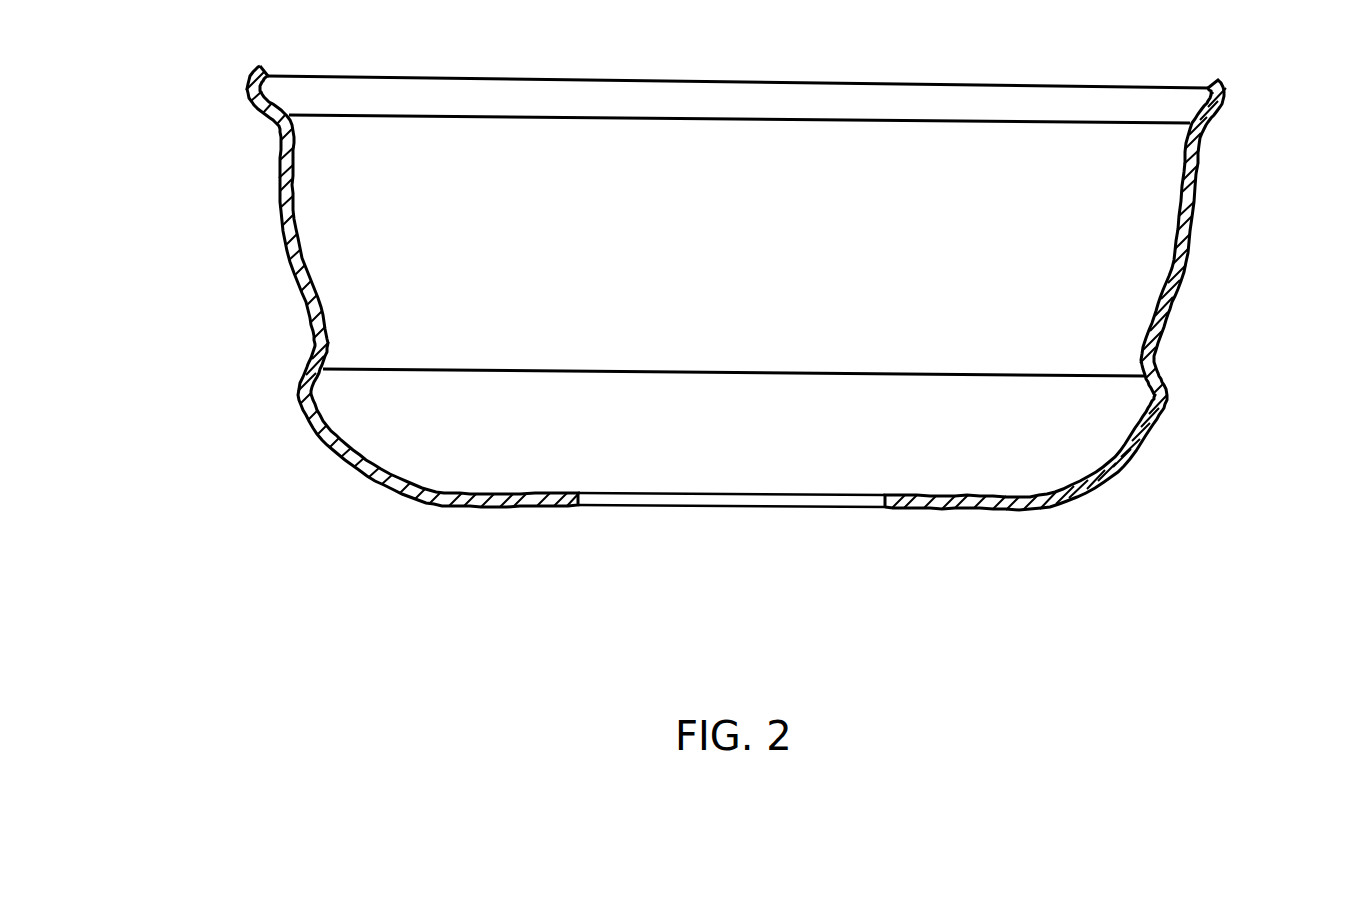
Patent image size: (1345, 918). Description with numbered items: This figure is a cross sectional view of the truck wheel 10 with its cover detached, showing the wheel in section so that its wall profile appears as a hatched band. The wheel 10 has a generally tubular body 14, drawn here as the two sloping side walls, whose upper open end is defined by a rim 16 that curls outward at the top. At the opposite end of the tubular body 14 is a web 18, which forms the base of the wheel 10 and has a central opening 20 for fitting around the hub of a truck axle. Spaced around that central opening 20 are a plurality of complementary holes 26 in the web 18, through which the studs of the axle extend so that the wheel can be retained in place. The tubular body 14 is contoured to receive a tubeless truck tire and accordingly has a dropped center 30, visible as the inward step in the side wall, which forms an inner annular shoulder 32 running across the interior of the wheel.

The truck wheel 10 is at (1200, 274).
The tubular body 14 is at (1168, 322).
The rim 16 is at (1214, 87).
The web 18 is at (993, 512).
The central opening 20 is at (581, 497).
The complementary holes 26 is at (890, 562).
The dropped center 30 is at (312, 337).
The inner annular shoulder 32 is at (383, 368).